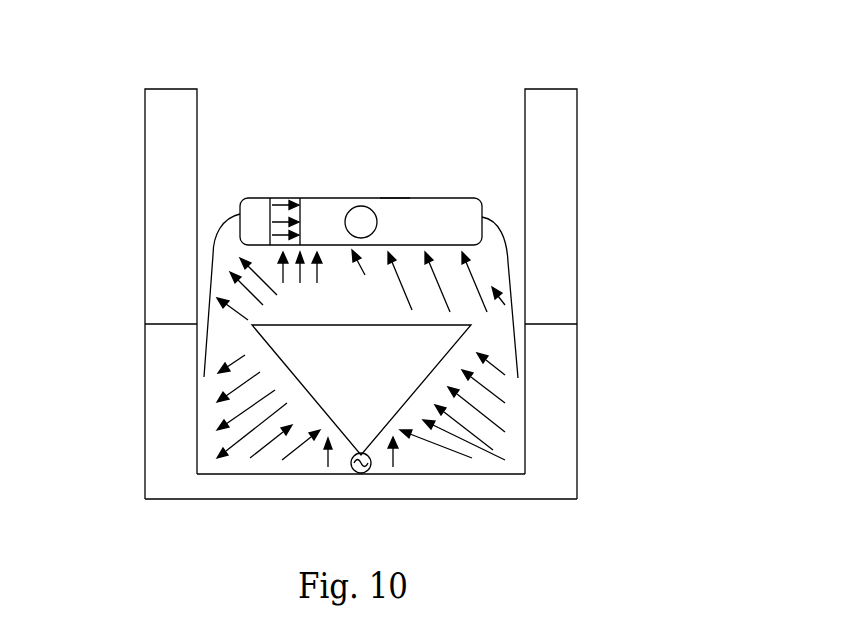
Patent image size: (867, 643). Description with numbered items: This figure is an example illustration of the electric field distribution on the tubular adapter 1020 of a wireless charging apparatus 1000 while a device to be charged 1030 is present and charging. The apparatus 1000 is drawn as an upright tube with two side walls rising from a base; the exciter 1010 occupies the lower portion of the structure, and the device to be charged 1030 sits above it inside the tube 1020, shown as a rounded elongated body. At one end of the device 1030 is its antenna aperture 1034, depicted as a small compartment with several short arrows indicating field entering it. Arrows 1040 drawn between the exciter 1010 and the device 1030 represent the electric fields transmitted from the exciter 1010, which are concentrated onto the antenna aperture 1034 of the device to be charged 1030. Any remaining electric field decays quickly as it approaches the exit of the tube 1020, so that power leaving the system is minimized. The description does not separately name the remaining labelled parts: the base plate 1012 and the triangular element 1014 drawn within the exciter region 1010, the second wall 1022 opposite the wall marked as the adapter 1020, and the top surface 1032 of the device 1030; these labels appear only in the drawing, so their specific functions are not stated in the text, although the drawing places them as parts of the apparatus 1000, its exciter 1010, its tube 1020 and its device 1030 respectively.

The charging apparatus 1000 is at (628, 72).
The exciter 1010 is at (130, 324).
The base plate 1012 is at (421, 487).
The heat source element 1014 is at (384, 384).
The tubular adapter 1020 is at (145, 182).
The right side wall 1022 is at (495, 157).
The device to be charged 1030 is at (462, 234).
The top surface of module 1032 is at (394, 172).
The antenna aperture 1034 is at (283, 198).
The heat flow arrows 1040 is at (300, 270).